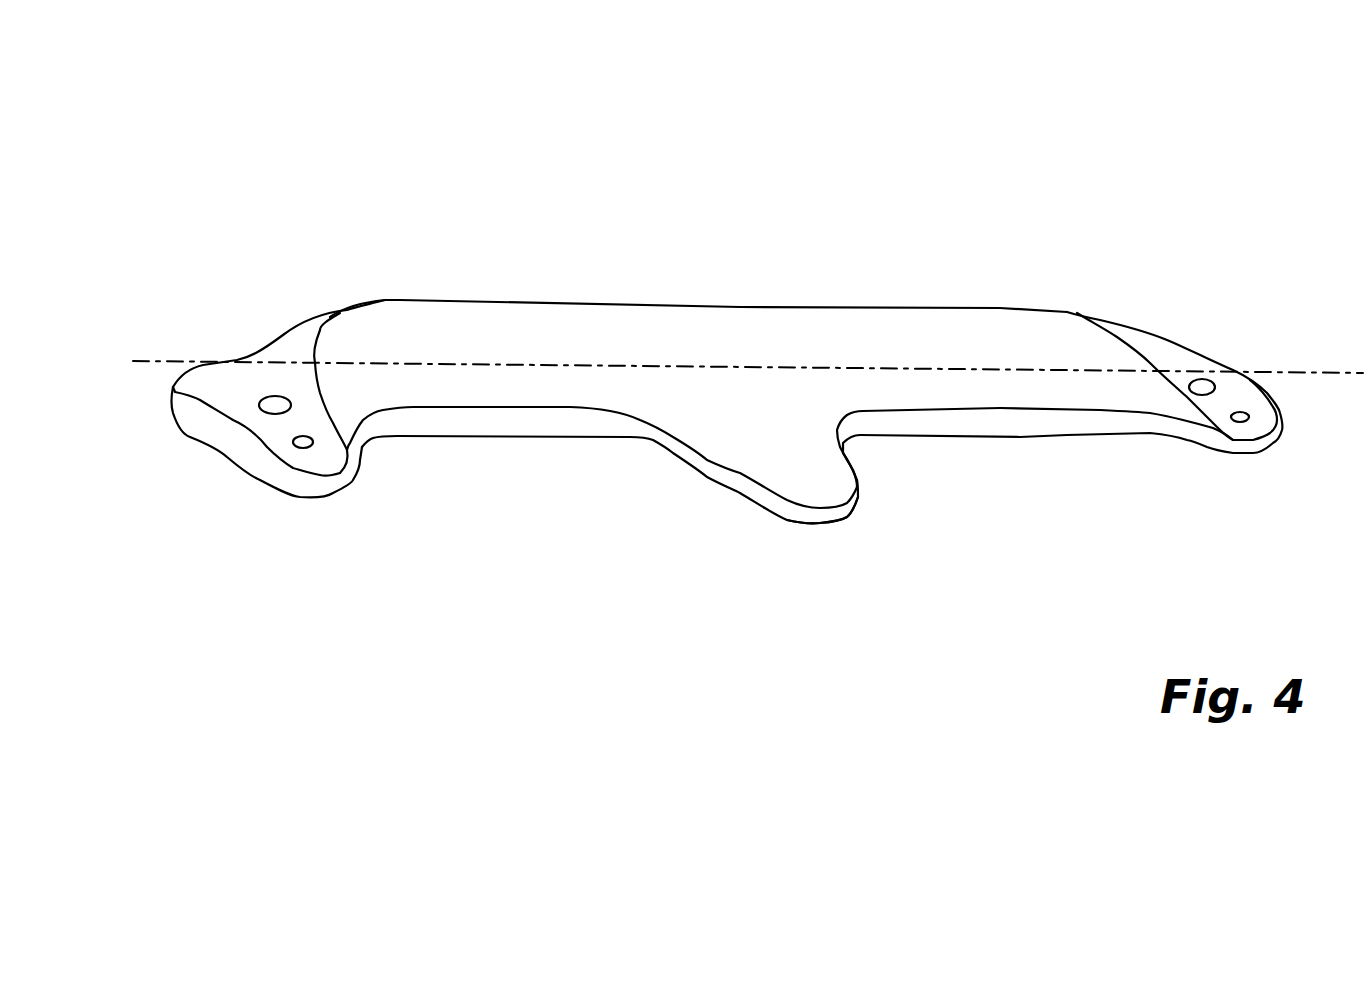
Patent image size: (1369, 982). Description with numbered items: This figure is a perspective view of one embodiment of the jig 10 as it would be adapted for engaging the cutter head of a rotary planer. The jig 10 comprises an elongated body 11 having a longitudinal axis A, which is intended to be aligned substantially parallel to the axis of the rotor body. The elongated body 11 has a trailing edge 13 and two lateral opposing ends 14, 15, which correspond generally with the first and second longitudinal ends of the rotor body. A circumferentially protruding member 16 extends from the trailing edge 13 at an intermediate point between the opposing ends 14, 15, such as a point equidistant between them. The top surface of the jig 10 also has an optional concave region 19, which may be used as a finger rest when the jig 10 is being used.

The jig 10 is at (703, 456).
The elongated body 11 is at (1262, 557).
The trailing edge 13 is at (487, 423).
The lateral opposing end 14 is at (150, 400).
The lateral opposing end 15 is at (1300, 390).
The circumferentially protruding member 16 is at (798, 478).
The concave region 19 is at (724, 414).
The longitudinal axis A is at (487, 365).